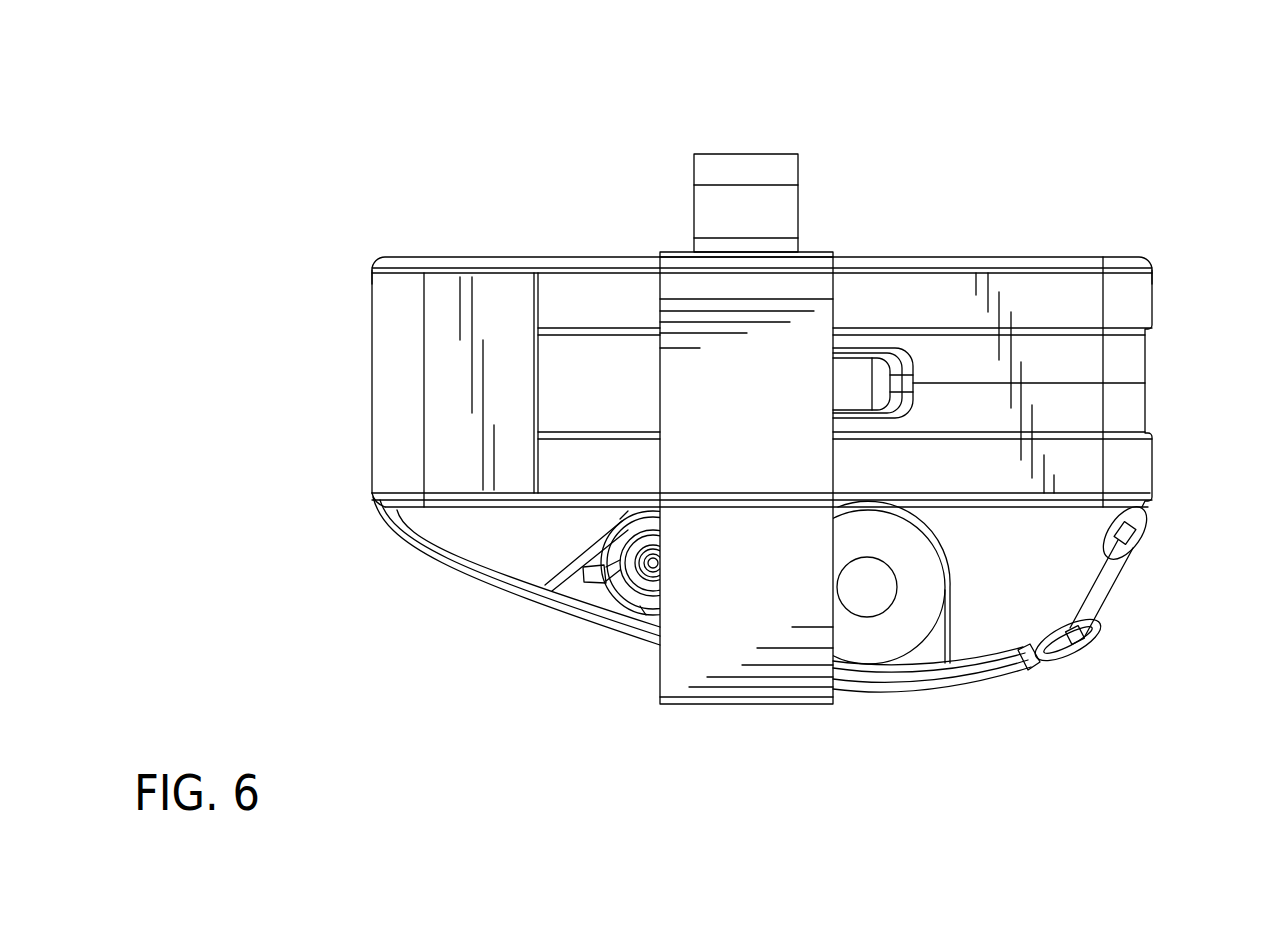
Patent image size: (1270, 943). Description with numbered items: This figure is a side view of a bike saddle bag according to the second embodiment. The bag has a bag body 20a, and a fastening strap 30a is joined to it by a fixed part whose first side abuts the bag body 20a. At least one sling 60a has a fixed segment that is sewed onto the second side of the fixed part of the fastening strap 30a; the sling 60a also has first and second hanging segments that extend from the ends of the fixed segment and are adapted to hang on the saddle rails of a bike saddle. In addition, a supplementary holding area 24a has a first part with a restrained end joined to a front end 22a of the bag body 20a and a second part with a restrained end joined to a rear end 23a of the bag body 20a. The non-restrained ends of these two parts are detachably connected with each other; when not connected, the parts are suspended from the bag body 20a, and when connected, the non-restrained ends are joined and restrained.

The bag body 20a is at (1057, 228).
The front end 22a is at (374, 363).
The rear end 23a is at (1145, 395).
The supplementary holding area 24a is at (916, 683).
The fastening strap 30a is at (738, 656).
The sling 60a is at (757, 124).